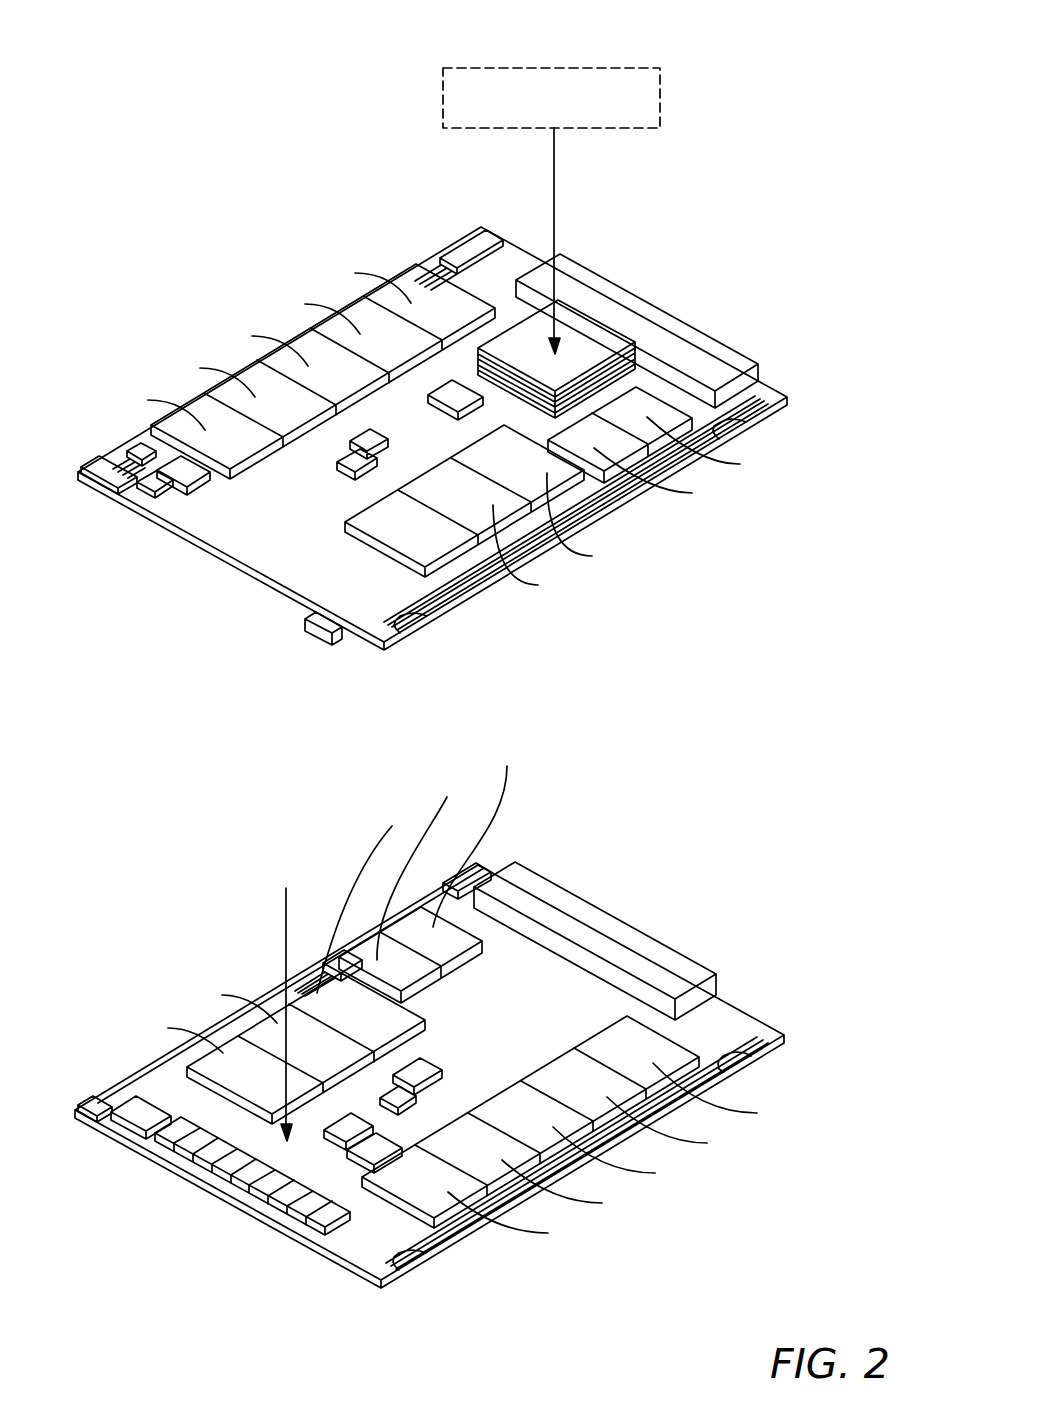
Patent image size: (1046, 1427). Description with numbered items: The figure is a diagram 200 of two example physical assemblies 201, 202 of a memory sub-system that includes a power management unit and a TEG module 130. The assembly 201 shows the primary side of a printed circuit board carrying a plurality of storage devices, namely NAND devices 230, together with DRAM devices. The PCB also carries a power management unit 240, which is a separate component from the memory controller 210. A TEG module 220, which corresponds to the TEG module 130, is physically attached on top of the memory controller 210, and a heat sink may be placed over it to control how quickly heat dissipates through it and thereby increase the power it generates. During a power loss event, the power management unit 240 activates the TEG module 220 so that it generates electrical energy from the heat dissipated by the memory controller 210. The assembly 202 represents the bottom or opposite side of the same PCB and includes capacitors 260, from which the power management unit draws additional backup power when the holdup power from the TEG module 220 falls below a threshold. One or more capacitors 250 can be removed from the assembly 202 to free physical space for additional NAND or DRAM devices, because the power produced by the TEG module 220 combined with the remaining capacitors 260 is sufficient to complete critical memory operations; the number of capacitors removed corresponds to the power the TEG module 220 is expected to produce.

The diagram 200 is at (766, 31).
The assembly 201 is at (297, 190).
The assembly 202 is at (766, 809).
The TEG module 130 is at (648, 68).
The memory controller 210 is at (628, 355).
The TEG module 220 is at (590, 348).
The NAND devices 230 is at (593, 470).
The power management unit 240 is at (447, 392).
The capacitors 250 is at (230, 1128).
The capacitors 260 is at (220, 1157).